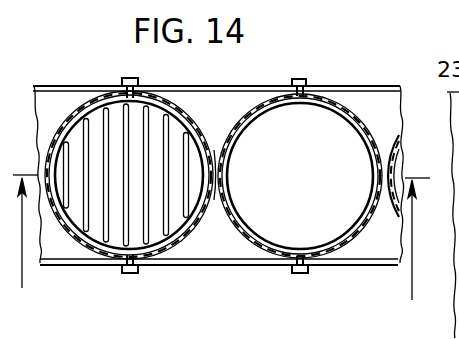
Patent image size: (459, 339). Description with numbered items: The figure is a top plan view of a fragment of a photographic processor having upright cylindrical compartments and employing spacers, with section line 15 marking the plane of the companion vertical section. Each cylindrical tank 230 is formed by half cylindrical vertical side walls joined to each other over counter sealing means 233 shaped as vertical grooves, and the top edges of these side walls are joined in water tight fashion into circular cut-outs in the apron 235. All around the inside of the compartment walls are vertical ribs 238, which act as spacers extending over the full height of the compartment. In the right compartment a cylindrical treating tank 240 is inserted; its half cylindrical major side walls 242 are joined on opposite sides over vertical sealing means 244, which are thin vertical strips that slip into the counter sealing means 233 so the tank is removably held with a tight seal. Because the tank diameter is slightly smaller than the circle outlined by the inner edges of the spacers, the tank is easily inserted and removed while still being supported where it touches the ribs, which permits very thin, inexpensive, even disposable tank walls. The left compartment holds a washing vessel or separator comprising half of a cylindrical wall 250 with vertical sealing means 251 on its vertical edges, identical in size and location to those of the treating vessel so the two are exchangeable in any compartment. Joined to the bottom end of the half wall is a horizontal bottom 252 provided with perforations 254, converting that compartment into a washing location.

The section line 15- 15 is at (221, 250).
The cylindrical tank 230 is at (78, 114).
The counter sealing means 233 is at (302, 78).
The apron 235 is at (208, 115).
The vertical ribs 238 is at (267, 92).
The cylindrical treating tank 240 is at (347, 248).
The half cylindrical major side walls 242 is at (318, 258).
The vertical sealing means 244 is at (310, 88).
The half cylindrical wall 250 is at (181, 242).
The vertical sealing means 251 is at (140, 266).
The horizontal bottom 252 is at (107, 259).
The perforations 254 is at (83, 236).